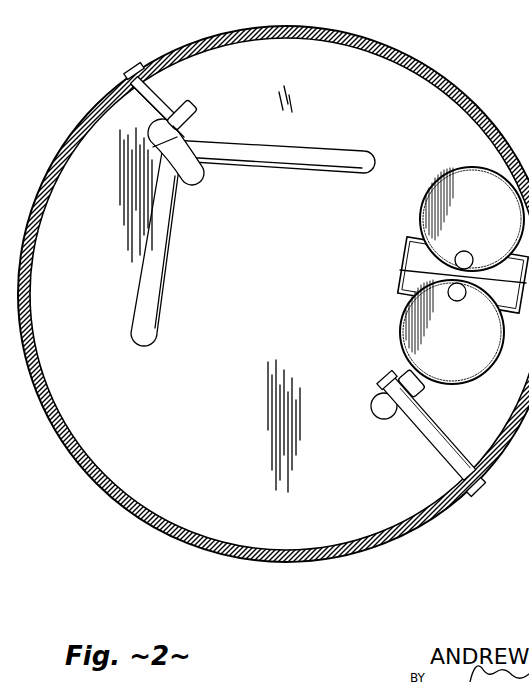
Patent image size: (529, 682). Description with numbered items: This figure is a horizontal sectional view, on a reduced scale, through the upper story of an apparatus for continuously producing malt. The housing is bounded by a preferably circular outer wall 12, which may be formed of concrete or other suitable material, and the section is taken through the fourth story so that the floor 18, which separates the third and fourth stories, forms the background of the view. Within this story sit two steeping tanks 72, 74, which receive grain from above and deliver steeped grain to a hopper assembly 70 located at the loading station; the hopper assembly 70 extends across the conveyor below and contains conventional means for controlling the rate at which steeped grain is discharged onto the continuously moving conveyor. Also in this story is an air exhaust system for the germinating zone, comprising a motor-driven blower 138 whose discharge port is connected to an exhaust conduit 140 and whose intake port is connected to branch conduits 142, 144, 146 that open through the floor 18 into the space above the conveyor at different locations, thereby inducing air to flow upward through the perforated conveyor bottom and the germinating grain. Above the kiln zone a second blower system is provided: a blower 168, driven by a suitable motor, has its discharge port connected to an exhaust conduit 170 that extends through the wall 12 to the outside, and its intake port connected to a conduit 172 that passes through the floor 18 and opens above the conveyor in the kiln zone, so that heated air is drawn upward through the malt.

The outer wall 12 is at (477, 109).
The floor 18 is at (150, 430).
The hopper assembly 70 is at (402, 278).
The steeping tank 72 is at (440, 177).
The steeping tank 74 is at (473, 369).
The blower 138 is at (189, 112).
The exhaust conduit 140 is at (152, 85).
The branch conduit 142 is at (191, 186).
The branch conduit 144 is at (277, 152).
The branch conduit 146 is at (152, 278).
The blower 168 is at (388, 375).
The exhaust conduit 170 is at (437, 440).
The conduit 172 is at (374, 407).